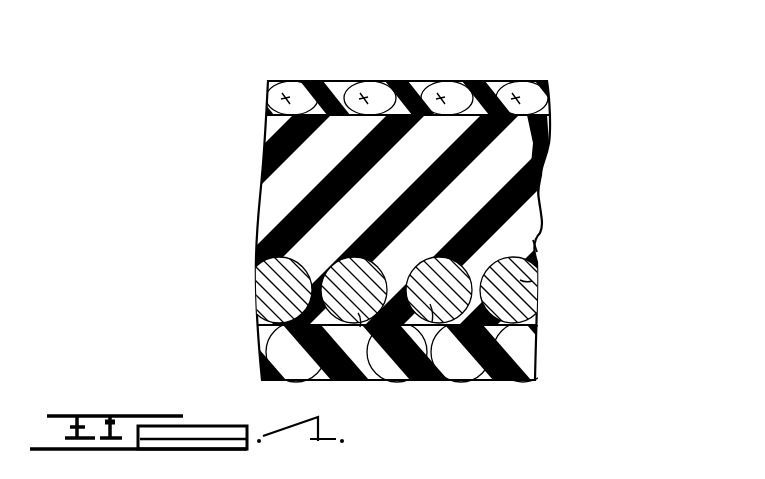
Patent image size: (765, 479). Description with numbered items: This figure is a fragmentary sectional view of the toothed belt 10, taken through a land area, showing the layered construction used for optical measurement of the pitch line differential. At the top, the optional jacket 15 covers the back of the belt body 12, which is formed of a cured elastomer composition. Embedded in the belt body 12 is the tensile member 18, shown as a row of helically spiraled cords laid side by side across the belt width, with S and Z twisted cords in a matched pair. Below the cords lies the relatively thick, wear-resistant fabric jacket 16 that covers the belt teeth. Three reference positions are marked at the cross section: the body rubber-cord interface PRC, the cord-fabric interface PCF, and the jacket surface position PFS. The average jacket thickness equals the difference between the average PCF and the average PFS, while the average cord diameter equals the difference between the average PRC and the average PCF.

The toothed belt 10 is at (218, 104).
The jacket 15 is at (302, 93).
The belt body 12 is at (287, 200).
The tensile member 18 is at (262, 298).
The jacket 16 is at (473, 347).
The body rubber-cord interface PRC is at (534, 246).
The cord-fabric interface PCF is at (535, 340).
The jacket surface position PFS is at (512, 382).